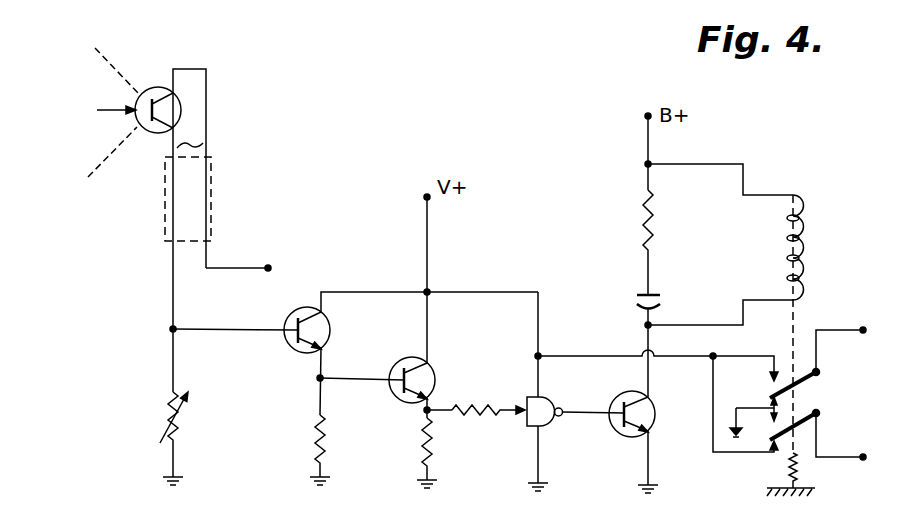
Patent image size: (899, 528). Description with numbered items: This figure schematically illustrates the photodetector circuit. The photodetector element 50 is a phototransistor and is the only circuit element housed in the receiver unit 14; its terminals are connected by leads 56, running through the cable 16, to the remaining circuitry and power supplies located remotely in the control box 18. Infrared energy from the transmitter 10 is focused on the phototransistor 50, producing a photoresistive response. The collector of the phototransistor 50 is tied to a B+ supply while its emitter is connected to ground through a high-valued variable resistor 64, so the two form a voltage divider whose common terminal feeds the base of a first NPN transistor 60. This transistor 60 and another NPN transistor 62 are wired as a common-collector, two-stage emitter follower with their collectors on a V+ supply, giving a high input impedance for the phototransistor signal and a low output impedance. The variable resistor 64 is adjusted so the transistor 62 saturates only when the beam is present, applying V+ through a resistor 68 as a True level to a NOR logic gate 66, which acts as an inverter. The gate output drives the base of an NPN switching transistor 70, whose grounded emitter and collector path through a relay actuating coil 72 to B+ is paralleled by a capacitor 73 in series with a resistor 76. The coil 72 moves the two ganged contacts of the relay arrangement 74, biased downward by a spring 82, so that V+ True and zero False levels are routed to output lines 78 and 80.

The transmitter 10 is at (77, 112).
The receiver unit 14 is at (199, 93).
The cable 16 is at (212, 195).
The control box 18 is at (324, 238).
The photodetector element 50 is at (158, 87).
The leads 56 is at (190, 135).
The first NPN transistor 60 is at (290, 346).
The NPN transistor 62 is at (397, 400).
The variable resistor 64 is at (182, 424).
The NOR logic gate 66 is at (551, 399).
The resistor 68 is at (468, 416).
The NPN switching transistor 70 is at (654, 409).
The relay actuating coil 72 is at (799, 194).
The capacitor 73 is at (656, 299).
The relay arrangement 74 is at (803, 383).
The resistor 76 is at (663, 216).
The output line 78 is at (849, 330).
The output line 80 is at (840, 458).
The spring 82 is at (786, 468).